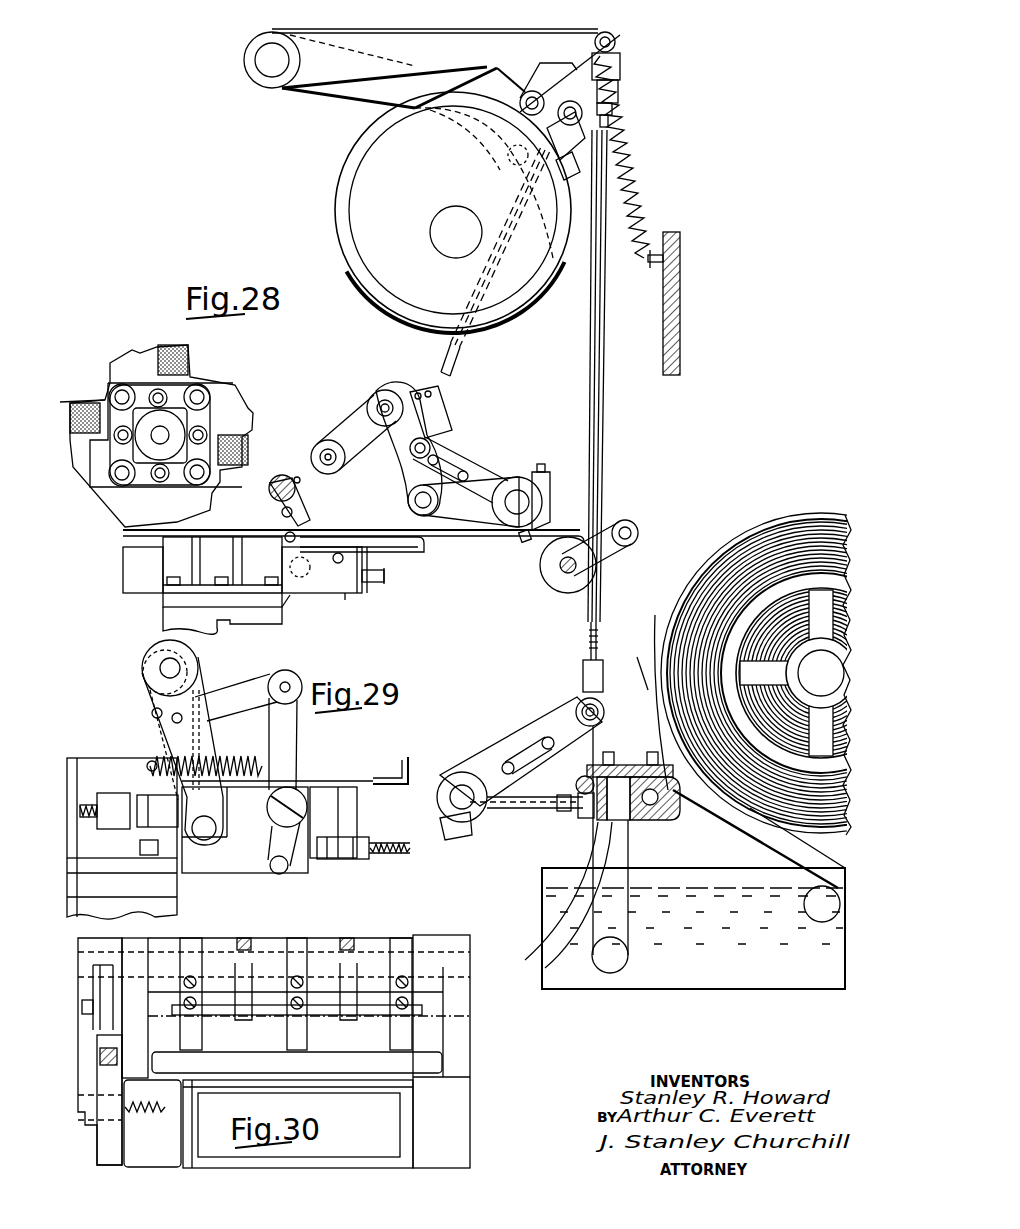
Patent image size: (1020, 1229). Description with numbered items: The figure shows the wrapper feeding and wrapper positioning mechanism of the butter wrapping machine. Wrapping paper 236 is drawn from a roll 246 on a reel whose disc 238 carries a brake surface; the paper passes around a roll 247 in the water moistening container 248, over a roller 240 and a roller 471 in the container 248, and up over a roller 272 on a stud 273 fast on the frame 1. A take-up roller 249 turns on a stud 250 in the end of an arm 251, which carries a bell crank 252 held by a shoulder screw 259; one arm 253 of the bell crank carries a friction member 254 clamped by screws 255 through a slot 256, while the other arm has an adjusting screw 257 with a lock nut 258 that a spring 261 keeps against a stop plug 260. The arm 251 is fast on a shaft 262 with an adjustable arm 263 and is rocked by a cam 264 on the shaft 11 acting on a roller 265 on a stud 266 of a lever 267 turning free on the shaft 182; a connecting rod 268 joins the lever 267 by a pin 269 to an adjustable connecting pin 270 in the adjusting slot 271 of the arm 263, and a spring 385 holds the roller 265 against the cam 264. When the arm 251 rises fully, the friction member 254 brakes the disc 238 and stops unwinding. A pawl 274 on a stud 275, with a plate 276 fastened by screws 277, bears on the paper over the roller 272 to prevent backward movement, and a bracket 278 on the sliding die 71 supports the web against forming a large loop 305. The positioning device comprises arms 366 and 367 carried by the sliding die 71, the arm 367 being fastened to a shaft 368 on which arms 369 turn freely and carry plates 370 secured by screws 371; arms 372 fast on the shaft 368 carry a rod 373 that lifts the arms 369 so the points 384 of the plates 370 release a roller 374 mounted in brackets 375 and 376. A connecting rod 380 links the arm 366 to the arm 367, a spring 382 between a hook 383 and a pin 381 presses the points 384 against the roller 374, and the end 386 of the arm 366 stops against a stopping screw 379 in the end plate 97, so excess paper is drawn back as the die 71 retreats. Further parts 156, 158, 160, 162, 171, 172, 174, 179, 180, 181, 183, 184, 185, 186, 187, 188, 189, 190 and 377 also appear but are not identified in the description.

In FIG. 28, the frame 1 is at (681, 320).
In FIG. 28, the shaft 11 is at (430, 232).
In FIG. 28, the sliding die 71 is at (290, 596).
In FIG. 29, the sliding die 71 is at (325, 808).
In FIG. 30, the sliding die 71 is at (365, 1095).
In FIG. 29, the end plate 97 is at (352, 862).
In FIG. 28, the rod connector 156 is at (450, 420).
In FIG. 28, the lever plate 158 is at (420, 386).
In FIG. 28, the arm 160 is at (368, 396).
In FIG. 28, the roller 162 is at (330, 440).
In FIG. 28, the pivot pin 171 is at (408, 497).
In FIG. 28, the link 172 is at (452, 464).
In FIG. 28, the link 174 is at (470, 537).
In FIG. 28, the roller 179 is at (524, 476).
In FIG. 28, the rod 180 is at (460, 350).
In FIG. 28, the belt 181 is at (356, 100).
In FIG. 28, the shaft 182 is at (290, 90).
In FIG. 28, the guide 183 is at (508, 156).
In FIG. 28, the drum 184 is at (336, 186).
In FIG. 28, the spring 185 is at (622, 185).
In FIG. 28, the fitting 186 is at (614, 110).
In FIG. 28, the pin 187 is at (650, 268).
In FIG. 28, the slot 188 is at (452, 455).
In FIG. 28, the pivot 189 is at (409, 452).
In FIG. 28, the pivot 190 is at (385, 390).
In FIG. 28, the wrapping paper 236 is at (783, 850).
In FIG. 28, the disc 238 is at (778, 518).
In FIG. 28, the roller 240 is at (672, 812).
In FIG. 28, the roll 246 is at (797, 516).
In FIG. 28, the roll 247 is at (820, 924).
In FIG. 28, the water moistening container 248 is at (760, 994).
In FIG. 28, the take-up roller 249 is at (632, 821).
In FIG. 28, the stud 250 is at (620, 764).
In FIG. 28, the arm 251 is at (582, 800).
In FIG. 28, the bell crank 252 is at (526, 690).
In FIG. 28, the arm of bell crank 253 is at (572, 880).
In FIG. 28, the friction member 254 is at (655, 622).
In FIG. 28, the screws 255 is at (628, 662).
In FIG. 28, the slot 256 is at (578, 712).
In FIG. 28, the adjusting screw 257 is at (520, 810).
In FIG. 28, the lock nut 258 is at (555, 768).
In FIG. 28, the shoulder screw 259 is at (525, 750).
In FIG. 28, the stop plug 260 is at (590, 830).
In FIG. 28, the spring 261 is at (560, 935).
In FIG. 28, the shaft 262 is at (458, 806).
In FIG. 28, the adjustable arm 263 is at (580, 712).
In FIG. 28, the cam 264 is at (350, 222).
In FIG. 28, the cam roller 265 is at (545, 103).
In FIG. 28, the stud 266 is at (583, 110).
In FIG. 28, the lever 267 is at (414, 68).
In FIG. 28, the connecting rod 268 is at (608, 402).
In FIG. 28, the pin 269 is at (616, 42).
In FIG. 28, the adjustable connecting pin 270 is at (585, 700).
In FIG. 28, the adjusting slot 271 is at (520, 745).
In FIG. 28, the roller 272 is at (597, 566).
In FIG. 28, the stud 273 is at (638, 537).
In FIG. 28, the pawl 274 is at (630, 522).
In FIG. 28, the stud 275 is at (640, 530).
In FIG. 28, the plate 276 is at (622, 520).
In FIG. 28, the screws 277 is at (630, 520).
In FIG. 28, the bracket 278 is at (402, 555).
In FIG. 28, the loop 305 is at (758, 859).
In FIG. 29, the arm 366 is at (296, 760).
In FIG. 29, the arm 367 is at (213, 750).
In FIG. 29, the shaft 368 is at (178, 670).
In FIG. 30, the shaft 368 is at (447, 970).
In FIG. 28, the arms 369 is at (299, 478).
In FIG. 30, the arms 369 is at (192, 942).
In FIG. 30, the plates 370 is at (204, 1040).
In FIG. 30, the screws 371 is at (300, 1004).
In FIG. 28, the arms 372 is at (278, 476).
In FIG. 30, the arms 372 is at (333, 938).
In FIG. 30, the rod 373 is at (424, 1012).
In FIG. 28, the roller 374 is at (340, 594).
In FIG. 30, the roller 374 is at (432, 1076).
In FIG. 30, the bracket 375 is at (152, 1123).
In FIG. 30, the bracket 376 is at (471, 1138).
In FIG. 29, the bolt 377 is at (148, 800).
In FIG. 28, the stopping screw 379 is at (350, 600).
In FIG. 29, the stopping screw 379 is at (340, 830).
In FIG. 29, the connecting rod 380 is at (244, 688).
In FIG. 29, the pin 381 is at (158, 795).
In FIG. 29, the spring 382 is at (267, 807).
In FIG. 29, the hook 383 is at (265, 769).
In FIG. 30, the points 384 is at (194, 1053).
In FIG. 28, the spring 385 is at (638, 200).
In FIG. 29, the end of arm 386 is at (272, 866).
In FIG. 28, the roller 471 is at (631, 849).